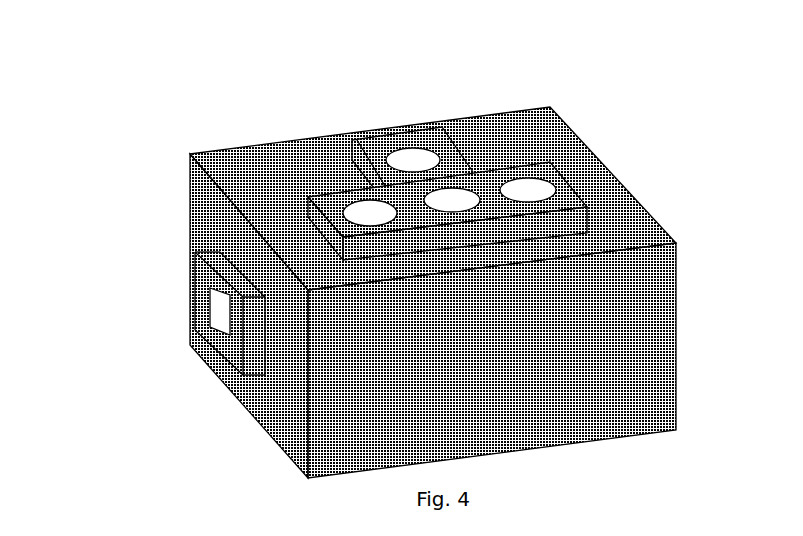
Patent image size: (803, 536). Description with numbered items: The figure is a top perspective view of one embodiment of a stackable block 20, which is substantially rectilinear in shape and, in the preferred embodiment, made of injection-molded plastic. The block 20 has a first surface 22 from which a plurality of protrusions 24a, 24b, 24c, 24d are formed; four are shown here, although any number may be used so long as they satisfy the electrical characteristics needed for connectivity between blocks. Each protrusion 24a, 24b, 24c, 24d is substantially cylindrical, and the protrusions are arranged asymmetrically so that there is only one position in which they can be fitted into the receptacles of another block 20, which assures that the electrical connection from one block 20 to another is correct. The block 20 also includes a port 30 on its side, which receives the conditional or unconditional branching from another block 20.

The stackable block 20 is at (128, 257).
The first surface 22 is at (620, 198).
The protrusion 24a is at (531, 188).
The protrusion 24b is at (452, 200).
The protrusion 24c is at (373, 213).
The protrusion 24d is at (411, 157).
The port 30 is at (217, 315).